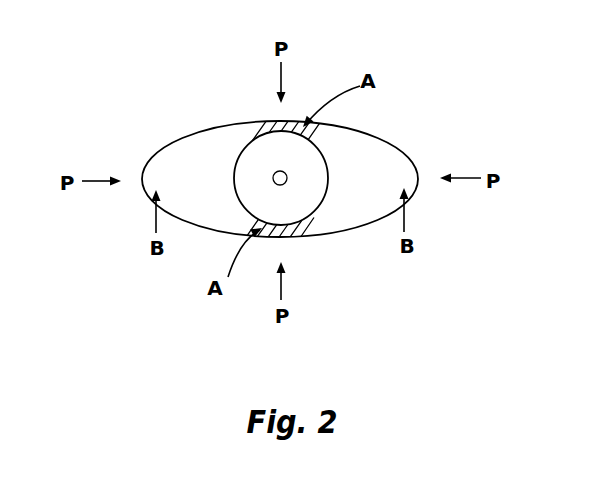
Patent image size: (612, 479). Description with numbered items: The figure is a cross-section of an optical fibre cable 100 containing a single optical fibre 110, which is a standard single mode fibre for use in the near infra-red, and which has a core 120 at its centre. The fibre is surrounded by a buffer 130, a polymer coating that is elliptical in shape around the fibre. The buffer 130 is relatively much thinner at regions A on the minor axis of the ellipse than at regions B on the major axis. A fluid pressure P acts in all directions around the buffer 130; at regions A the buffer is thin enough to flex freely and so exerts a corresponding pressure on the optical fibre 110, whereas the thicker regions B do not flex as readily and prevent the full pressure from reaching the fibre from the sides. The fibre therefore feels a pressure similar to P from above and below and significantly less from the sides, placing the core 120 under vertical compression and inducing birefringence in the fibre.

The optical fibre cable 100 is at (414, 126).
The optical fibre 110 is at (323, 203).
The core 120 is at (273, 176).
The buffer 130 is at (325, 226).